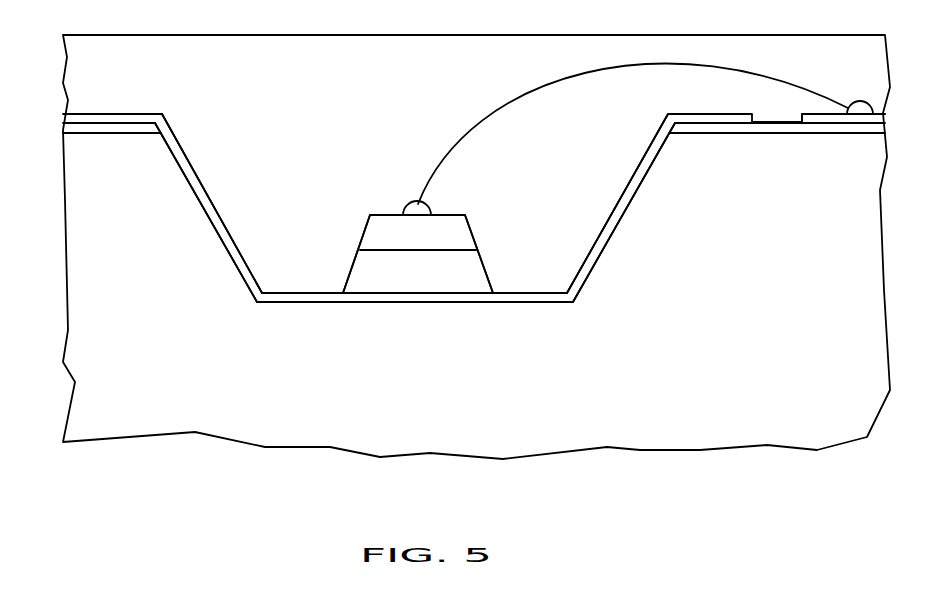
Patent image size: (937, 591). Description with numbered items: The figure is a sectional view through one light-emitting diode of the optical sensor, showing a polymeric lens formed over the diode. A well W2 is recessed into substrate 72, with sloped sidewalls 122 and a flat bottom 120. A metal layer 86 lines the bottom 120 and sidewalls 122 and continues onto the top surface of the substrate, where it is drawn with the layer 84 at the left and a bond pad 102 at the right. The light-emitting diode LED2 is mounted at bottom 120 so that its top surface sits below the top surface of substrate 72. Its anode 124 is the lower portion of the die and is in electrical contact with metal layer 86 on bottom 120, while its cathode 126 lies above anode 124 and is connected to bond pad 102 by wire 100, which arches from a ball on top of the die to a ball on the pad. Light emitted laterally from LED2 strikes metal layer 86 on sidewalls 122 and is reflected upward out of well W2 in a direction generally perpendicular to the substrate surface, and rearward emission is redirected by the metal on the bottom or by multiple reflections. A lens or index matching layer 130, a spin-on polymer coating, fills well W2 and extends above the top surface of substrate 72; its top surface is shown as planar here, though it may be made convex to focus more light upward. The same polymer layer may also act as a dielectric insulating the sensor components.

The substrate 72 is at (773, 401).
The lens or index matching layer 130 is at (453, 77).
The first conductive layer 84 is at (77, 127).
The metal layer 86 is at (183, 152).
The sidewalls 122 is at (183, 173).
The bottom 120 is at (520, 304).
The light-emitting diode LED2 is at (367, 186).
The anode 124 is at (347, 280).
The cathode 126 is at (477, 240).
The wire 100 is at (543, 87).
The bond pad 102 is at (827, 114).
The well W2 is at (238, 266).